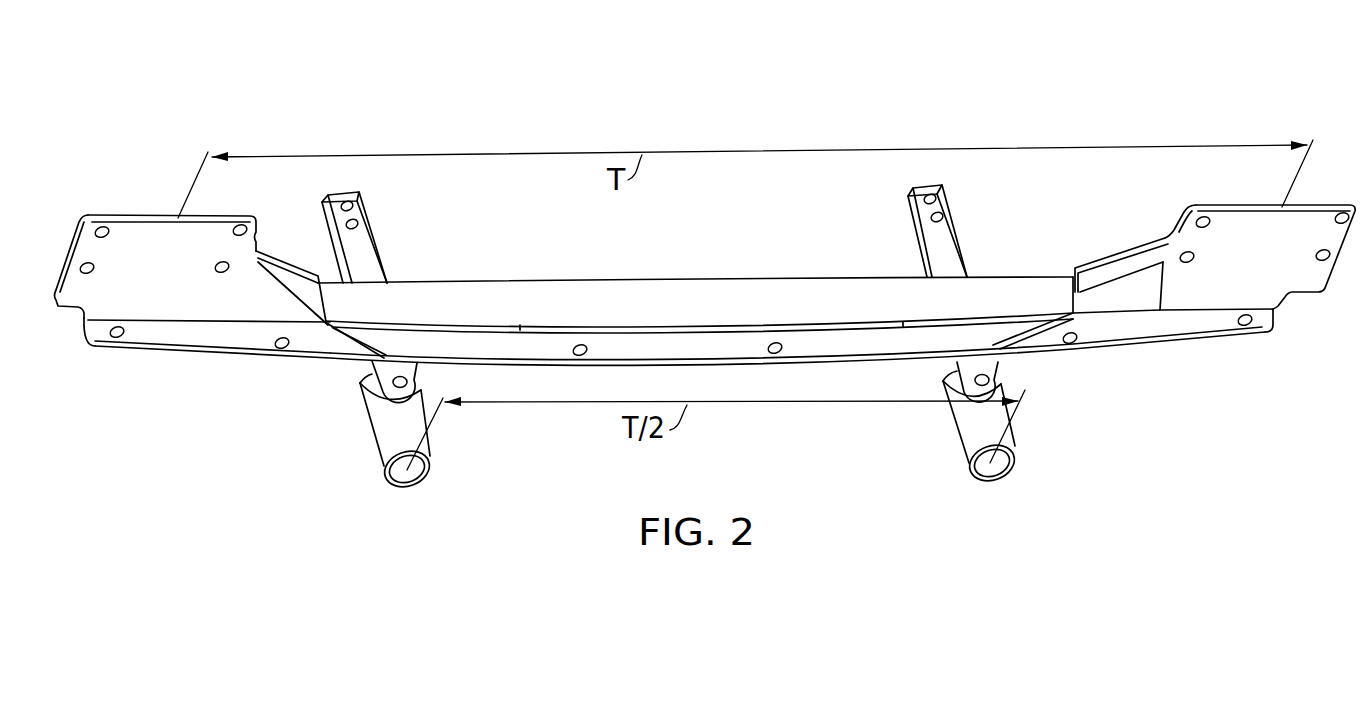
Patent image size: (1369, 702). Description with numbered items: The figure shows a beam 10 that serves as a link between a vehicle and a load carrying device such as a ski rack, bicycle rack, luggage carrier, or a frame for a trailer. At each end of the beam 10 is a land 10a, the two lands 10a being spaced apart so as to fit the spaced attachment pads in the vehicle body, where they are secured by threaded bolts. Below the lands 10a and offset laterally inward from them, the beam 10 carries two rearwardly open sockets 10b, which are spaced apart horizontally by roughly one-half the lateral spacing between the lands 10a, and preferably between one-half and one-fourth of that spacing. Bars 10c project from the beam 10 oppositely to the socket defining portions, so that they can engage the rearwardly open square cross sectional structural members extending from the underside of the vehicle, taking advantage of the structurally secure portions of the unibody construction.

The beam 10 is at (705, 266).
The land 10a is at (170, 303).
The rearwardly open socket 10b is at (392, 437).
The bar 10c is at (363, 258).